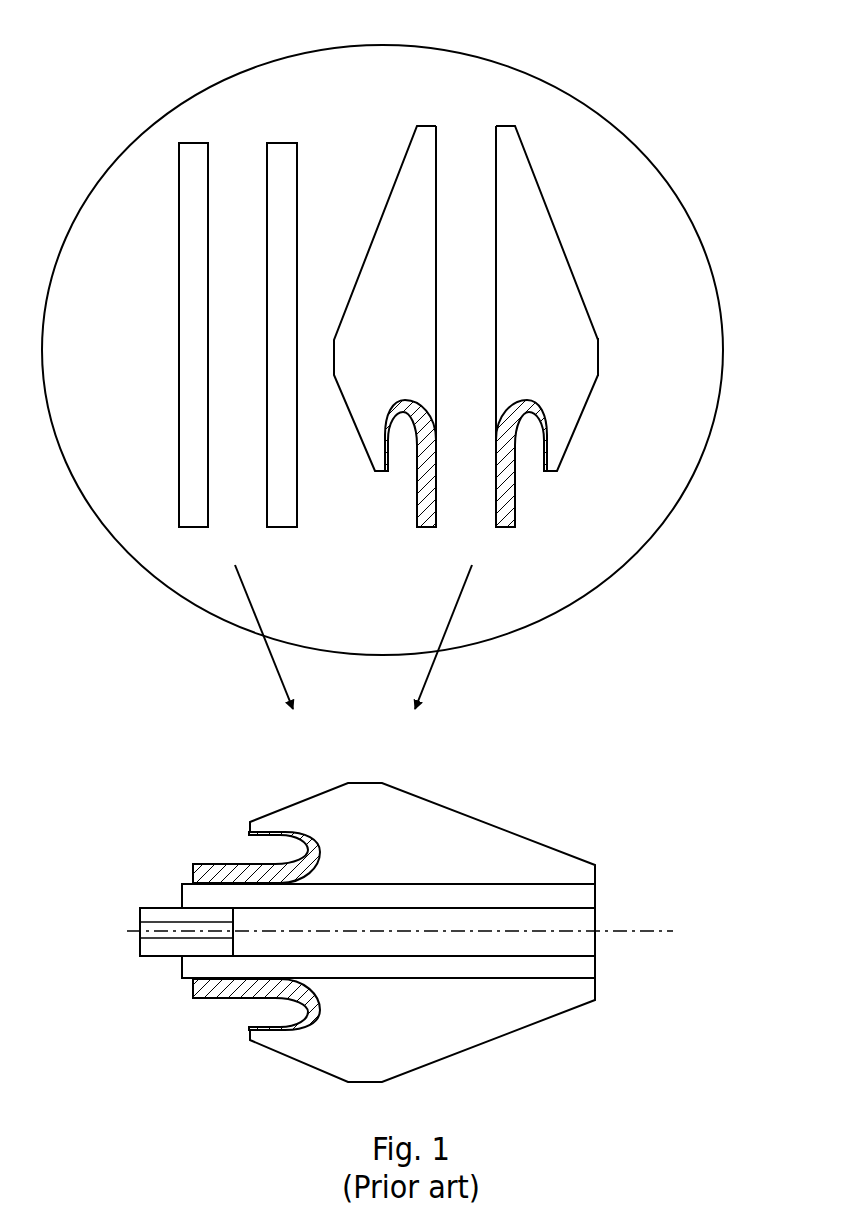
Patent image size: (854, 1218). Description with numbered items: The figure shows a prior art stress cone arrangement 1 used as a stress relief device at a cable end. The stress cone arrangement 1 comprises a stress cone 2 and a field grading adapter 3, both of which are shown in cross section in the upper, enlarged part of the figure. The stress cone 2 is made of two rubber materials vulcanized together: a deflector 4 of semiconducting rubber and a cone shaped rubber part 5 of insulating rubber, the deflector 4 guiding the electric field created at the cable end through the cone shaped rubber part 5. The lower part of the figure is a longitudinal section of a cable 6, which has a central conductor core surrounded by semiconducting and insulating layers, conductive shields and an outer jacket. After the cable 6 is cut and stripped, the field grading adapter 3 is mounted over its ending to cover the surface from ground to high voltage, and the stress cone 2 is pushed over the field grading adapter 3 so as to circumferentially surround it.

The stress cone arrangement 1 is at (459, 70).
The stress cone 2 is at (597, 260).
The field grading adapter 3 is at (190, 382).
The deflector 4 is at (513, 488).
The cone shaped rubber part 5 is at (560, 354).
The cable 6 is at (588, 923).